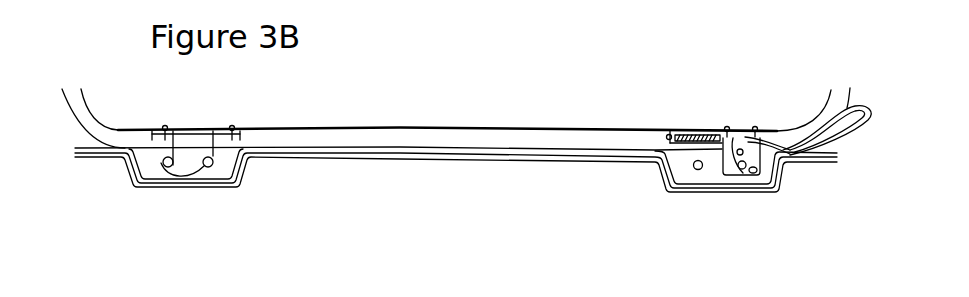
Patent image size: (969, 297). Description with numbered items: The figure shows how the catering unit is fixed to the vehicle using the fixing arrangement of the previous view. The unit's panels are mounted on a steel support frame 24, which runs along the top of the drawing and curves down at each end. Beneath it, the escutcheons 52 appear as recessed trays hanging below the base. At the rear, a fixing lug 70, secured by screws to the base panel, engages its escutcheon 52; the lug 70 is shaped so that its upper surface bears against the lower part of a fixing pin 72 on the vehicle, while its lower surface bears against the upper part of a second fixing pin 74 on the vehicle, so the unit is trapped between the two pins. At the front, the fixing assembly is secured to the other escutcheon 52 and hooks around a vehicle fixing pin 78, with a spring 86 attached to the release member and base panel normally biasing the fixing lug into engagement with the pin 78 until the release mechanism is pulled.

The steel support frame 24 is at (88, 110).
The escutcheon 52 is at (238, 178).
The rear fixing lug 70 is at (187, 147).
The fixing pin 72 is at (162, 160).
The fixing pin 74 is at (207, 165).
The spring 86 is at (692, 137).
The fixing pin 78 is at (738, 173).